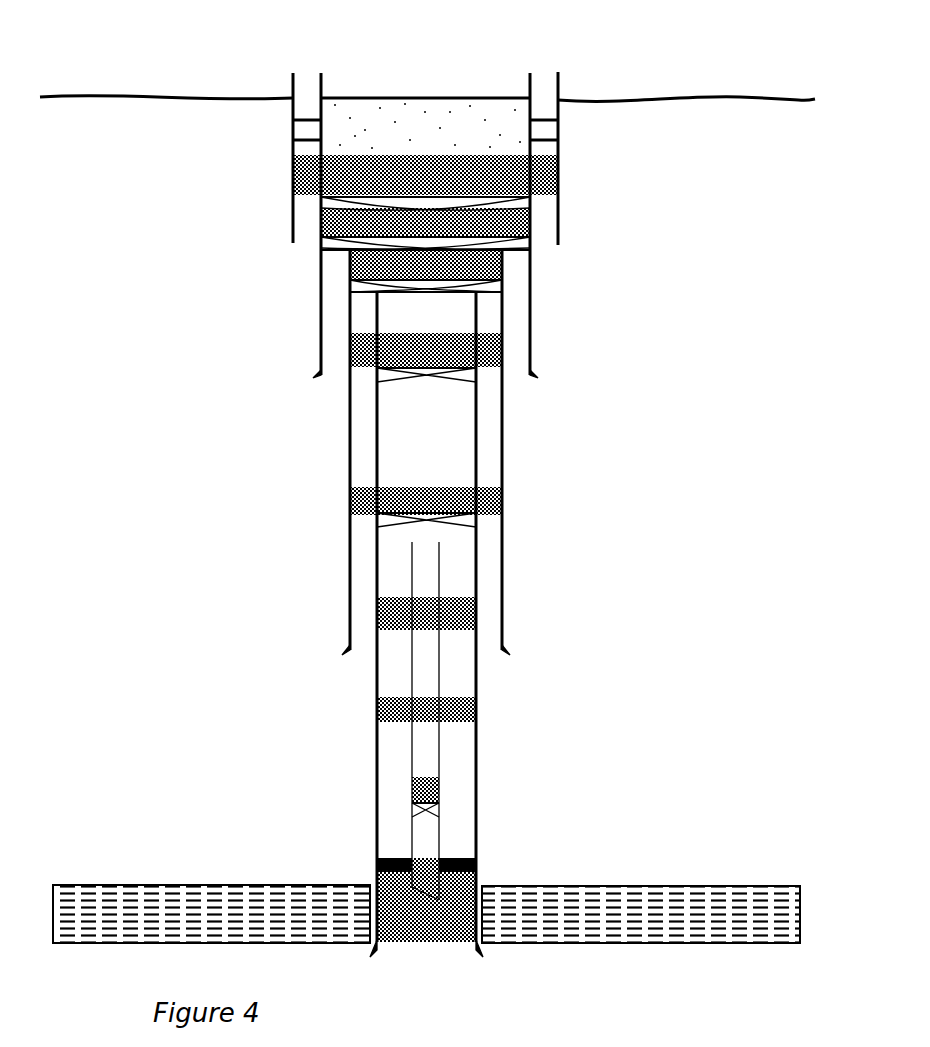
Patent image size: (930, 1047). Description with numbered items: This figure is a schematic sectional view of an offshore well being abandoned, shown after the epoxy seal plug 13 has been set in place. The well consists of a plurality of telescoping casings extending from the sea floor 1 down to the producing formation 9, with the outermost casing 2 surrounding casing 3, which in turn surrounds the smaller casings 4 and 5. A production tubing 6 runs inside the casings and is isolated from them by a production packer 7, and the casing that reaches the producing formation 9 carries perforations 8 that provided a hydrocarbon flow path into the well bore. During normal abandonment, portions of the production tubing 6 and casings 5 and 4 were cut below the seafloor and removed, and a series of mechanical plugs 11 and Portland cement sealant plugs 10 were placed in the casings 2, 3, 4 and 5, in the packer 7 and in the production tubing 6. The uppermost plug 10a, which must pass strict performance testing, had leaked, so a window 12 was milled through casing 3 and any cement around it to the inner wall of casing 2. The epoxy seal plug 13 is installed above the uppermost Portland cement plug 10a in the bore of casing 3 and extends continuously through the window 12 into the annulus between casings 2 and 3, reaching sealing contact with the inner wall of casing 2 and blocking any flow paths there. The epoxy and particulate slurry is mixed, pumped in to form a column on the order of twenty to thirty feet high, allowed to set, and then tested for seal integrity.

The sea floor 1 is at (677, 98).
The casing 2 is at (559, 183).
The casing 3 is at (531, 292).
The casing 4 is at (503, 494).
The casing 5 is at (477, 728).
The production tubing 6 is at (443, 795).
The production packer 7 is at (453, 858).
The perforations 8 is at (468, 915).
The producing formation 9 is at (642, 945).
The Portland cement sealant plugs 10 is at (322, 223).
The uppermost plug 10a is at (297, 175).
The mechanical plugs 11 is at (322, 203).
The window 12 is at (308, 132).
The epoxy seal plug 13 is at (426, 97).